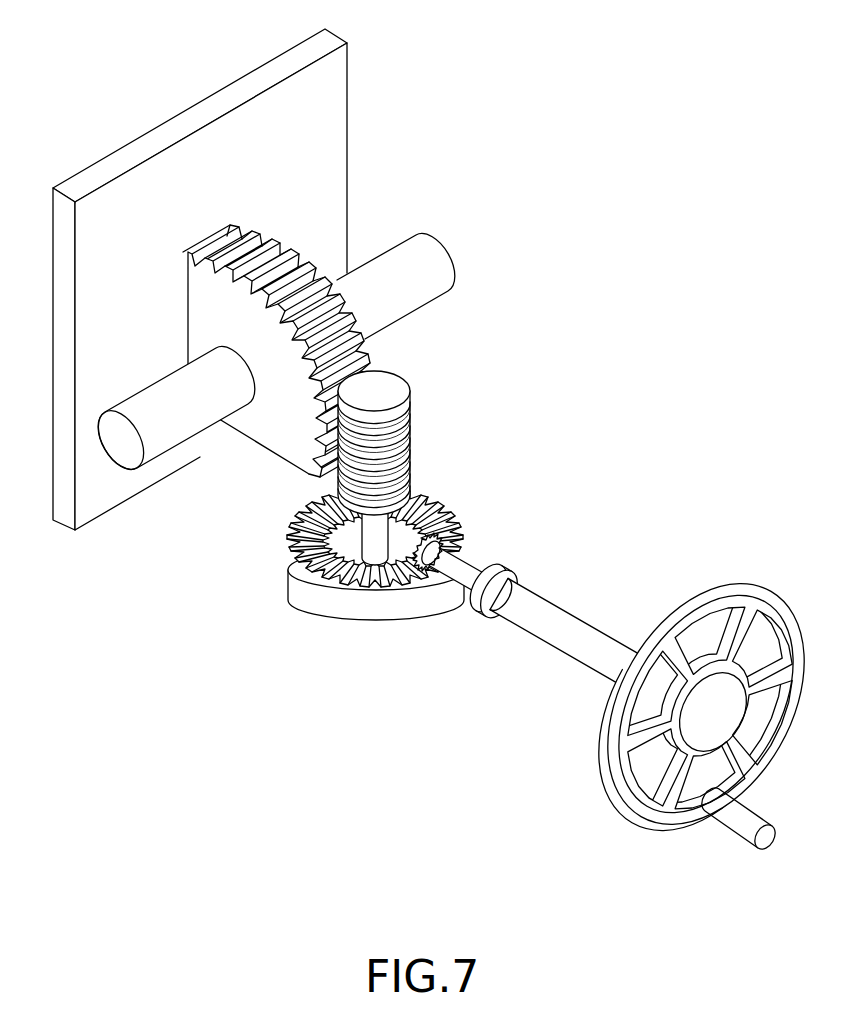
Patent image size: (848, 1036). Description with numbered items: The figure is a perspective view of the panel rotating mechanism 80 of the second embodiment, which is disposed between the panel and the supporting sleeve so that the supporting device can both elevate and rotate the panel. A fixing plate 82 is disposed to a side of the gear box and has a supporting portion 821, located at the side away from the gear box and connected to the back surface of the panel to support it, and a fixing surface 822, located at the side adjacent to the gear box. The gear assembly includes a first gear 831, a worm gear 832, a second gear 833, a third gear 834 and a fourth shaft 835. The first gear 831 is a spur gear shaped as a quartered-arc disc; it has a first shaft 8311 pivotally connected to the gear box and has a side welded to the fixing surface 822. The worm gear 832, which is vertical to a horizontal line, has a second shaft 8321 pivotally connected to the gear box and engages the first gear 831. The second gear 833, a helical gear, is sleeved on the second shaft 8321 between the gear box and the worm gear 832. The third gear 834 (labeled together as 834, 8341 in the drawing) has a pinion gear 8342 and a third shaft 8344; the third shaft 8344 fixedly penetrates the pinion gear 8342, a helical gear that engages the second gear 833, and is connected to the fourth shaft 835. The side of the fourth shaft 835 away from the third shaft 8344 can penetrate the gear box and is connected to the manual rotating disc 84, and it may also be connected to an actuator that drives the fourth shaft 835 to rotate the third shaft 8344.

The panel rotating mechanism 80 is at (716, 29).
The fixing plate 82 is at (353, 112).
The supporting portion 821 is at (278, 75).
The fixing surface 822 is at (312, 140).
The first gear 831 is at (290, 275).
The first shaft 8311 is at (433, 272).
The worm gear 832 is at (386, 386).
The second shaft 8321 is at (375, 540).
The second gear 833 is at (300, 537).
The third gear 834 is at (448, 472).
The transmission shaft 8341 is at (446, 577).
The pinion gear 8342 is at (412, 545).
The third shaft 8344 is at (472, 570).
The fourth shaft 835 is at (570, 618).
The manual rotating disc 84 is at (709, 597).